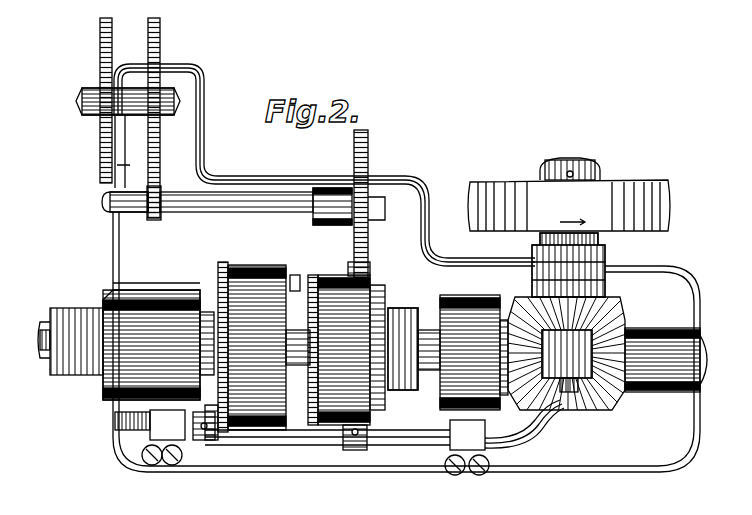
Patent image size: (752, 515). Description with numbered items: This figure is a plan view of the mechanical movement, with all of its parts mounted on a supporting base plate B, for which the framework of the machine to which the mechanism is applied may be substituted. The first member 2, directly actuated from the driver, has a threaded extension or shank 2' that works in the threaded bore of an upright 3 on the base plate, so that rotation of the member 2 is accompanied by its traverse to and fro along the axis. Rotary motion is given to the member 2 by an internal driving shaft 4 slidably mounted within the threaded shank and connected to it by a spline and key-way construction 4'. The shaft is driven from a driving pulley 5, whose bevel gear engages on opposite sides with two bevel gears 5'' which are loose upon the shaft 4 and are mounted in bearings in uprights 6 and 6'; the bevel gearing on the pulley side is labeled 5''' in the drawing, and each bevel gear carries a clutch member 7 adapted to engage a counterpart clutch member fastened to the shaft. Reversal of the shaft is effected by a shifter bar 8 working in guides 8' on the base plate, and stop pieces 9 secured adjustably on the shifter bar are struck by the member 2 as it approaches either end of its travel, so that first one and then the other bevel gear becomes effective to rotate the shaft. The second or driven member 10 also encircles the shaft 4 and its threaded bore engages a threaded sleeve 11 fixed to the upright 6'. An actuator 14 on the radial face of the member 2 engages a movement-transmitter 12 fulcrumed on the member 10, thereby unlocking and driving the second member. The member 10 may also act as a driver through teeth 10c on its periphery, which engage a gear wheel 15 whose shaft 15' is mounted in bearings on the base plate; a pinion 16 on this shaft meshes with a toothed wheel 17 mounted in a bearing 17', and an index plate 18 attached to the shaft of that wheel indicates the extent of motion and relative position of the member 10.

The supporting base plate B is at (406, 342).
The member 2 is at (252, 347).
The threaded extension or shank 2' is at (69, 356).
The upright 3 is at (158, 345).
The internal driving shaft 4 is at (28, 333).
The spline and key-way construction 4' is at (26, 347).
The driving pulley 5 is at (569, 194).
The bevel gear 5'' is at (568, 353).
The column 5''' is at (595, 277).
The upright 6 is at (674, 348).
The upright 6' is at (470, 344).
The clutch member 7 is at (588, 398).
The shifter bar 8 is at (327, 449).
The guides 8' is at (315, 461).
The stop pieces 9 is at (213, 440).
The second member 10 is at (375, 292).
The teeth 10c is at (343, 257).
The threaded sleeve 11 is at (400, 396).
The movement-transmitter 12 is at (313, 290).
The actuator 14 is at (293, 275).
The gear wheel 15 is at (378, 205).
The shaft 15' is at (236, 215).
The pinion 16 is at (150, 196).
The toothed wheel 17 is at (173, 118).
The bearing 17' is at (324, 155).
The index plate 18 is at (103, 25).